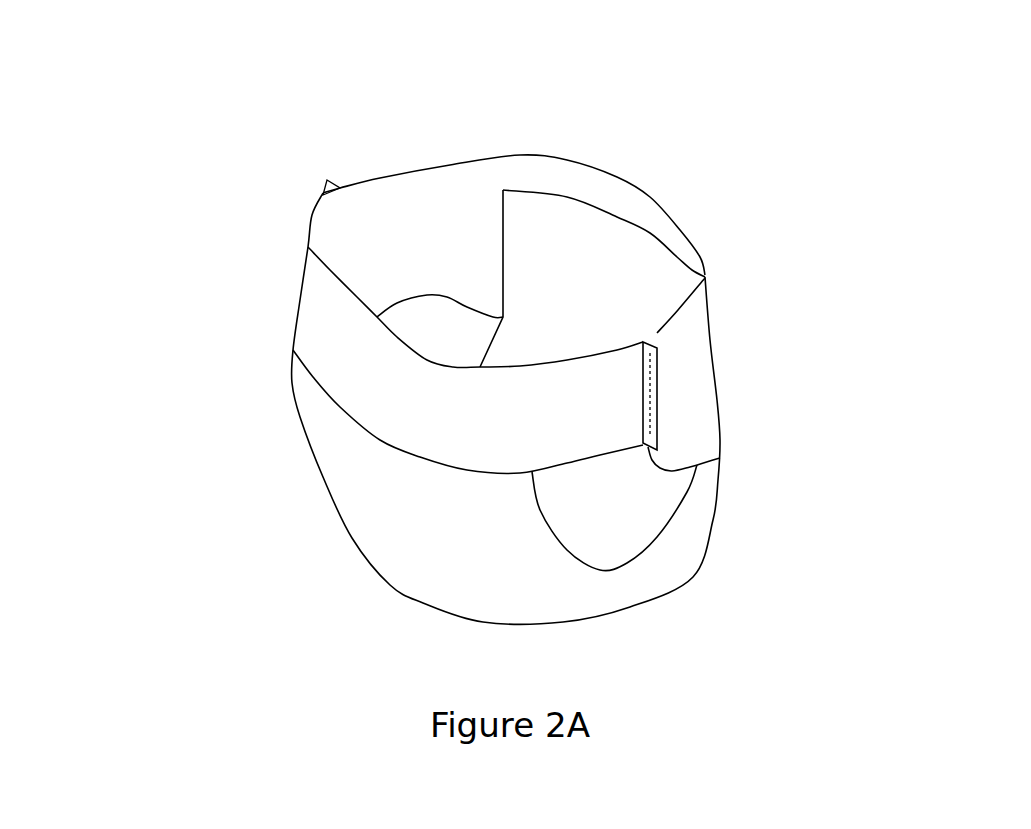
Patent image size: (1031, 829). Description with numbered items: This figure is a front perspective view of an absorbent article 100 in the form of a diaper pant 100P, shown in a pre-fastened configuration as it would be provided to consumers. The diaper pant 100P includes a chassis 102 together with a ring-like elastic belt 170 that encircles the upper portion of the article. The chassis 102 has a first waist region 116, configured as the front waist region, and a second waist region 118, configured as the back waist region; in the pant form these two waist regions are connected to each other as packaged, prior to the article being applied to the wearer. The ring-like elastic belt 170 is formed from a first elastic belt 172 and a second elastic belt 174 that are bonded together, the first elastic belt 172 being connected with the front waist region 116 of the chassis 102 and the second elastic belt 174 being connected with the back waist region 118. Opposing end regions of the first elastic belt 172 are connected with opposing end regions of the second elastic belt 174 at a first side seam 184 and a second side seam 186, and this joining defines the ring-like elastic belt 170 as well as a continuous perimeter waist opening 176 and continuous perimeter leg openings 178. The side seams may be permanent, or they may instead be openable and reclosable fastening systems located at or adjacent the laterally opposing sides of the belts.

The absorbent article 100 is at (788, 284).
The diaper pant 100P is at (435, 370).
The chassis 102 is at (490, 593).
The first waist region 116 is at (340, 470).
The second waist region 118 is at (590, 268).
The ring-like elastic belt 170 is at (340, 375).
The first elastic belt 172 is at (340, 347).
The second elastic belt 174 is at (630, 200).
The waist opening 176 is at (440, 230).
The leg openings 178 is at (413, 330).
The first side seam 184 is at (652, 382).
The second side seam 186 is at (327, 180).